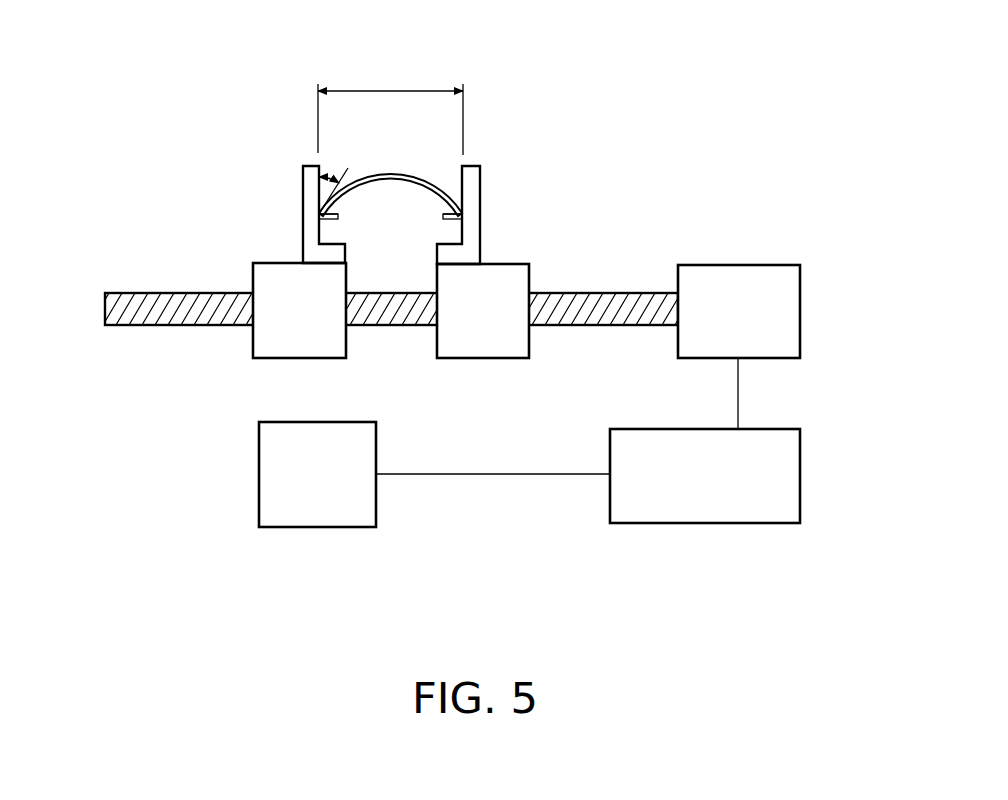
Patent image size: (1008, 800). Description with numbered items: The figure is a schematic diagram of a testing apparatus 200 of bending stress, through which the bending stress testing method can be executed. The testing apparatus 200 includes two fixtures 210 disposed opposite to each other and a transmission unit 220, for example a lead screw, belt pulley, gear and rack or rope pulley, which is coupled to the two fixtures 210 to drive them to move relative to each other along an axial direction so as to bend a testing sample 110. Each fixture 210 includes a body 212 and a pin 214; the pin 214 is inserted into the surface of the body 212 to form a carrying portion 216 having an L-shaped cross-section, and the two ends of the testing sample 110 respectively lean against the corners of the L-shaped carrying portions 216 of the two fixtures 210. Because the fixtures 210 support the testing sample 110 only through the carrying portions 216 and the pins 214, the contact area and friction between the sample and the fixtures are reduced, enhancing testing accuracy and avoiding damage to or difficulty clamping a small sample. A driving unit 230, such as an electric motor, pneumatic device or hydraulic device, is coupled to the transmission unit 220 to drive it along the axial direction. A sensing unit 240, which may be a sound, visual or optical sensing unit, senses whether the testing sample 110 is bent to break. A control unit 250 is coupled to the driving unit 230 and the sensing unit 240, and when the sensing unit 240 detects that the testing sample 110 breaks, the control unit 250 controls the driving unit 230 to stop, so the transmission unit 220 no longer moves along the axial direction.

The testing sample 110 is at (390, 173).
The testing apparatus of bending stress 200 is at (480, 320).
The fixture 210 is at (389, 204).
The body 212 is at (303, 200).
The pin 214 is at (389, 222).
The carrying portion 216 is at (336, 210).
The transmission unit 220 is at (581, 293).
The driving unit 230 is at (801, 318).
The sensing unit 240 is at (259, 475).
The control unit 250 is at (800, 480).